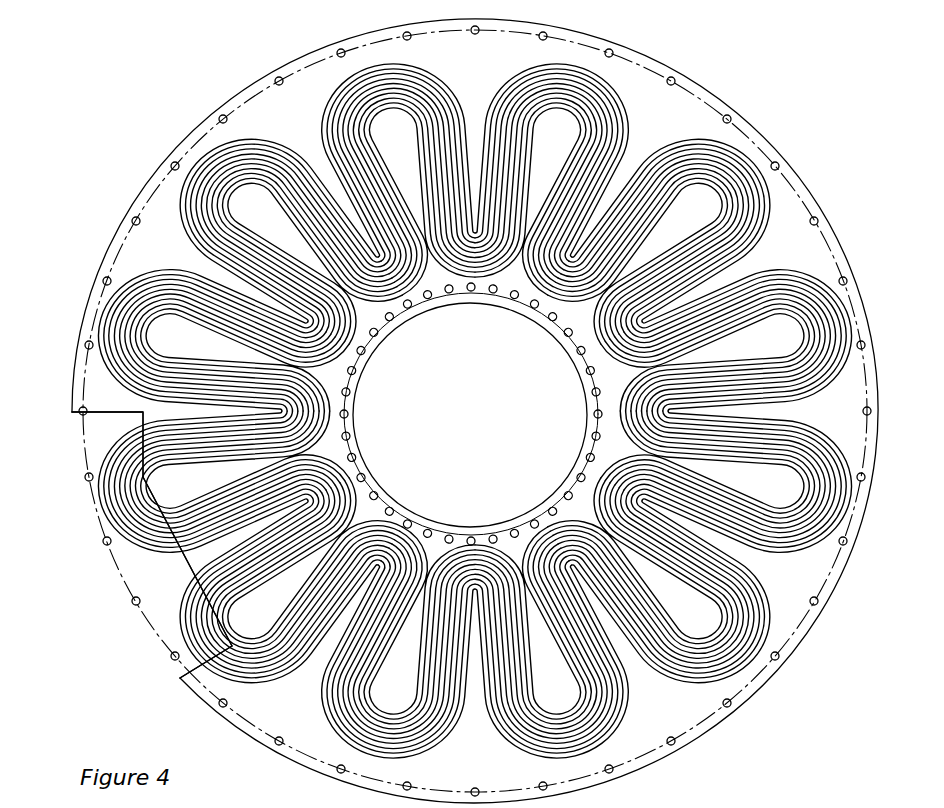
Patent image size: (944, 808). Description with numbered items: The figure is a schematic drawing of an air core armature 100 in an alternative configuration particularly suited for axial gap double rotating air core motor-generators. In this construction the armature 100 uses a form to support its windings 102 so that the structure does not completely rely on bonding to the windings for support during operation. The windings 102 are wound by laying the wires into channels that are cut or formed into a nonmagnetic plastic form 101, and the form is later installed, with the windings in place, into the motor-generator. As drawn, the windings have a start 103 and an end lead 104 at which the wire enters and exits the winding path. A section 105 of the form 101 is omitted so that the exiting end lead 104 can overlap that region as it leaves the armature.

The air core armature 100 is at (121, 47).
The nonmagnetic plastic form 101 is at (704, 95).
The windings 102 is at (413, 292).
The start 103 is at (143, 431).
The end lead 104 is at (116, 534).
The section 105 is at (146, 607).